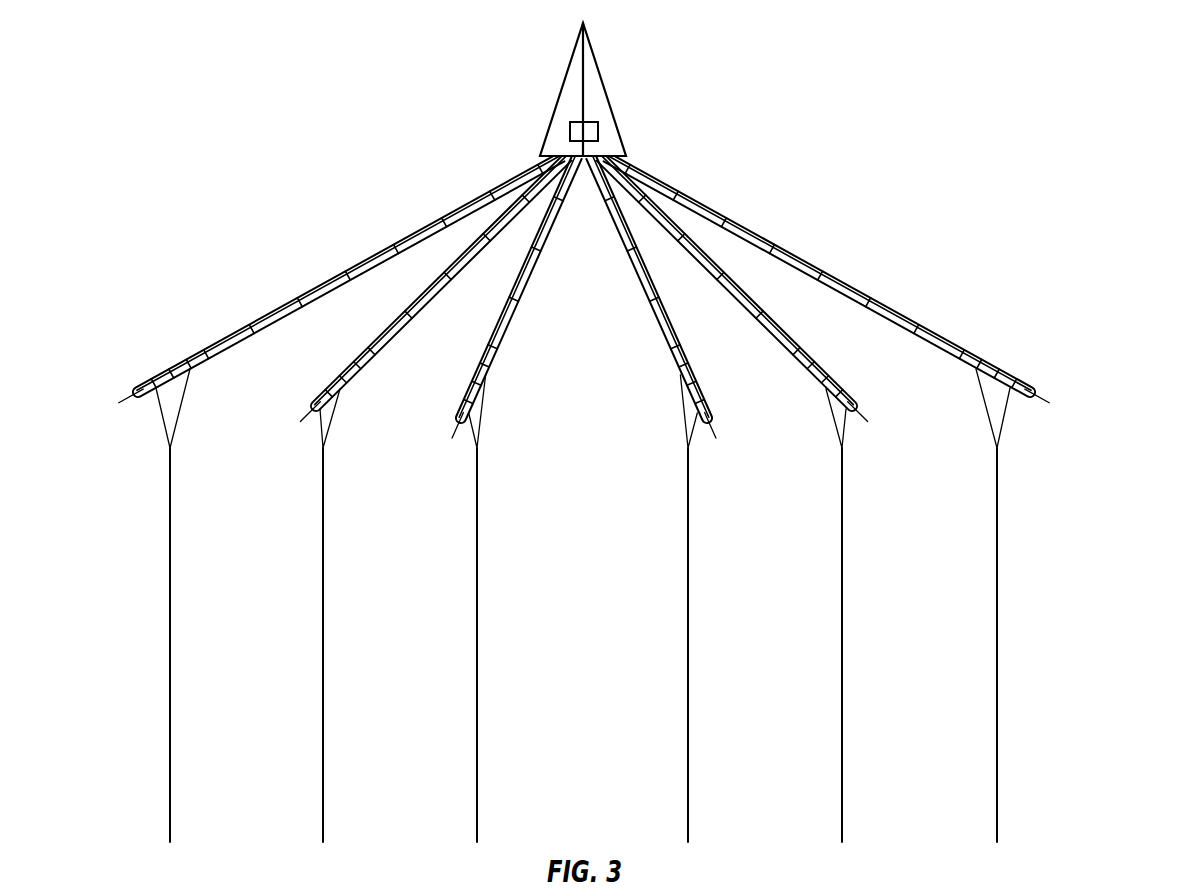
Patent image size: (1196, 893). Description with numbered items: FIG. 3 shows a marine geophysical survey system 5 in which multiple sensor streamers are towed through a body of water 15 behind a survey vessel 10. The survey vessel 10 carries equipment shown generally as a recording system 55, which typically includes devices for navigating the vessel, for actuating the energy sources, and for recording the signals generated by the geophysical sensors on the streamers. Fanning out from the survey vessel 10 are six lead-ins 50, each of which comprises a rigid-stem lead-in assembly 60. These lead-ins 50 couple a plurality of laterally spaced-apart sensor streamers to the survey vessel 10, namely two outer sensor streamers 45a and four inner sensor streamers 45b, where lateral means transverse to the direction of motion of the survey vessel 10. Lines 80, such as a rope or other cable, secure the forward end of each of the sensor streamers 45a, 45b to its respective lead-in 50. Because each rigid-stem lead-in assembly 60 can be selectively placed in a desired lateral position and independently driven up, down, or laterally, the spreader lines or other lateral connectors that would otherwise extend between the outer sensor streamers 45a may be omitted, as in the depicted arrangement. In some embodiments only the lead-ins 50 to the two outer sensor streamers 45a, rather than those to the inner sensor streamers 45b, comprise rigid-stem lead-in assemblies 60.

The marine geophysical survey system 5 is at (1116, 345).
The survey vessel 10 is at (602, 81).
The body of water 15 is at (1031, 303).
The outer sensor streamers 45a is at (170, 581).
The inner sensor streamers 45b is at (323, 581).
The lead-in 50 is at (347, 262).
The recording system 55 is at (599, 133).
The rigid-stem lead-in assembly 60 is at (294, 299).
The lines 80 is at (166, 424).